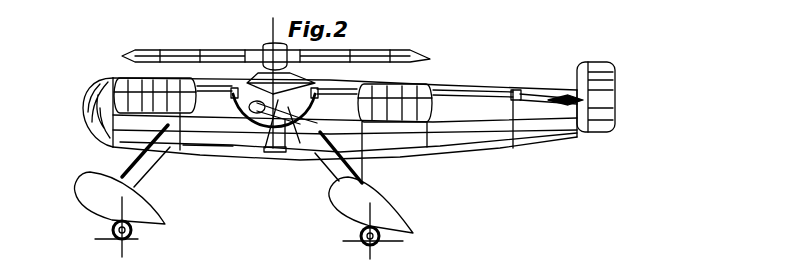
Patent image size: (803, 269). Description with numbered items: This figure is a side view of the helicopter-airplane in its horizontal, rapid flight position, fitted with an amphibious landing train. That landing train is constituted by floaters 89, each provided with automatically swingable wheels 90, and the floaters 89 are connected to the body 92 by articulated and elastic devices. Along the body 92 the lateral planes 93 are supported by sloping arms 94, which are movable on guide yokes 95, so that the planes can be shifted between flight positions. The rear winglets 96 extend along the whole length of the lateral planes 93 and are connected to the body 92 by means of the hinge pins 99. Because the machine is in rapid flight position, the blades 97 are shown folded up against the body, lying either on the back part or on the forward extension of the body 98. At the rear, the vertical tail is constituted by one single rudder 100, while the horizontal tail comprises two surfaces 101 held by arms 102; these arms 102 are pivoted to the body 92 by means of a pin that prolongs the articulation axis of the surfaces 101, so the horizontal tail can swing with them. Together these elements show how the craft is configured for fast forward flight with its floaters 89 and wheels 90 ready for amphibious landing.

The floaters 89 is at (378, 205).
The automatically swingable wheels 90 is at (140, 242).
The body 92 is at (460, 130).
The lateral planes 93 is at (252, 149).
The sloping arms 94 is at (273, 158).
The guide yokes 95 is at (232, 146).
The rear winglets 96 is at (301, 150).
The blades 97 is at (123, 82).
The forward extension of the body 98 is at (103, 127).
The hinge pins 99 is at (233, 90).
The rudder 100 is at (602, 108).
The surfaces 101 is at (572, 97).
The arms 102 is at (527, 92).